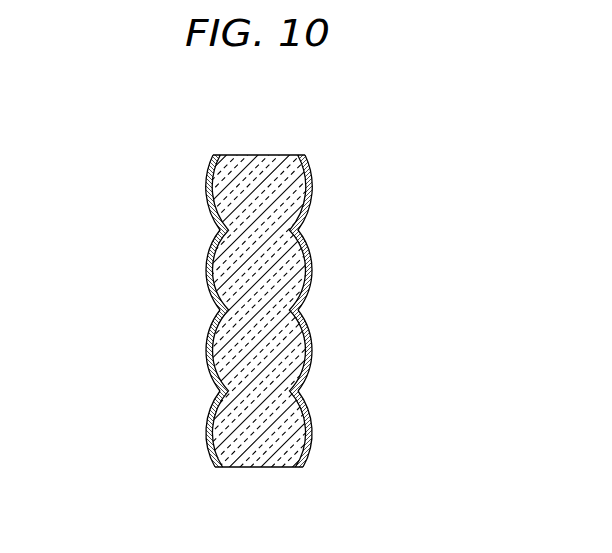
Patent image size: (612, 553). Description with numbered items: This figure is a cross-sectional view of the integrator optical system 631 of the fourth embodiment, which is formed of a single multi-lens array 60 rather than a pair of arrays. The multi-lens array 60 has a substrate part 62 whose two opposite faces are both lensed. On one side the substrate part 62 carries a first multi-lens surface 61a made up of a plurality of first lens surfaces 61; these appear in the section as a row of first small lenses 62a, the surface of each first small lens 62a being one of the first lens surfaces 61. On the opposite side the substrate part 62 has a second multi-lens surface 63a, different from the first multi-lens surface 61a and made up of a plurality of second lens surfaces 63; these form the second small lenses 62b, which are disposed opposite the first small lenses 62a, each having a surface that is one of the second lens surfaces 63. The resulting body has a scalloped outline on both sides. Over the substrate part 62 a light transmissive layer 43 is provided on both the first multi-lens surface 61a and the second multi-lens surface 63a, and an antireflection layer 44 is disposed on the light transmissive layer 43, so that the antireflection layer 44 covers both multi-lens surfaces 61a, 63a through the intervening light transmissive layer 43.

The multi-lens array 60 is at (272, 168).
The substrate part 62 is at (216, 184).
The first small lenses 62a is at (212, 262).
The second small lenses 62b is at (290, 264).
The light transmissive layer 43 is at (212, 333).
The antireflection layer 44 is at (310, 330).
The integrator optical system 631 is at (251, 153).
The first lens surfaces 61 is at (194, 450).
The first multi-lens surface 61a is at (194, 462).
The second lens surfaces 63 is at (364, 430).
The second multi-lens surface 63a is at (313, 433).